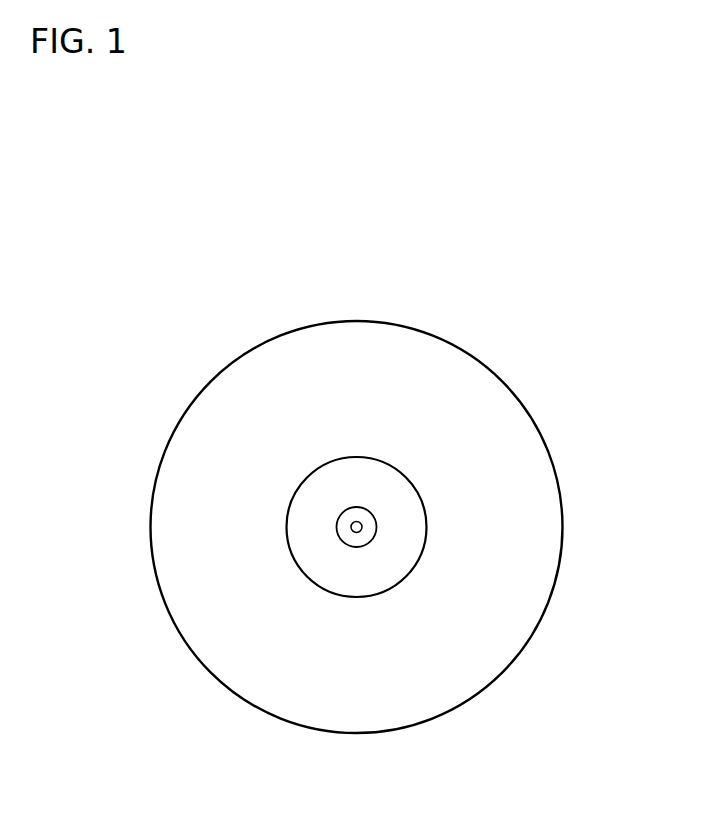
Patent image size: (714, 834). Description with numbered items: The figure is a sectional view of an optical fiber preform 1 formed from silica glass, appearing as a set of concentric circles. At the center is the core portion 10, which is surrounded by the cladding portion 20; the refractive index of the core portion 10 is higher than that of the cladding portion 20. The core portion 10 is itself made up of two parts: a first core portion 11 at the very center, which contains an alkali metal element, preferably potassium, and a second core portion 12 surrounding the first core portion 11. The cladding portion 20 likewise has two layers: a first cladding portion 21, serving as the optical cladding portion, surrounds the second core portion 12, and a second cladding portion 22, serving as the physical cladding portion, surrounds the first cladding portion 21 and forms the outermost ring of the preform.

The optical fiber preform 1 is at (556, 264).
The core portion 10 is at (612, 348).
The first core portion 11 is at (362, 525).
The second core portion 12 is at (366, 537).
The cladding portion 20 is at (612, 640).
The first cladding portion 21 is at (400, 563).
The second cladding portion 22 is at (468, 675).